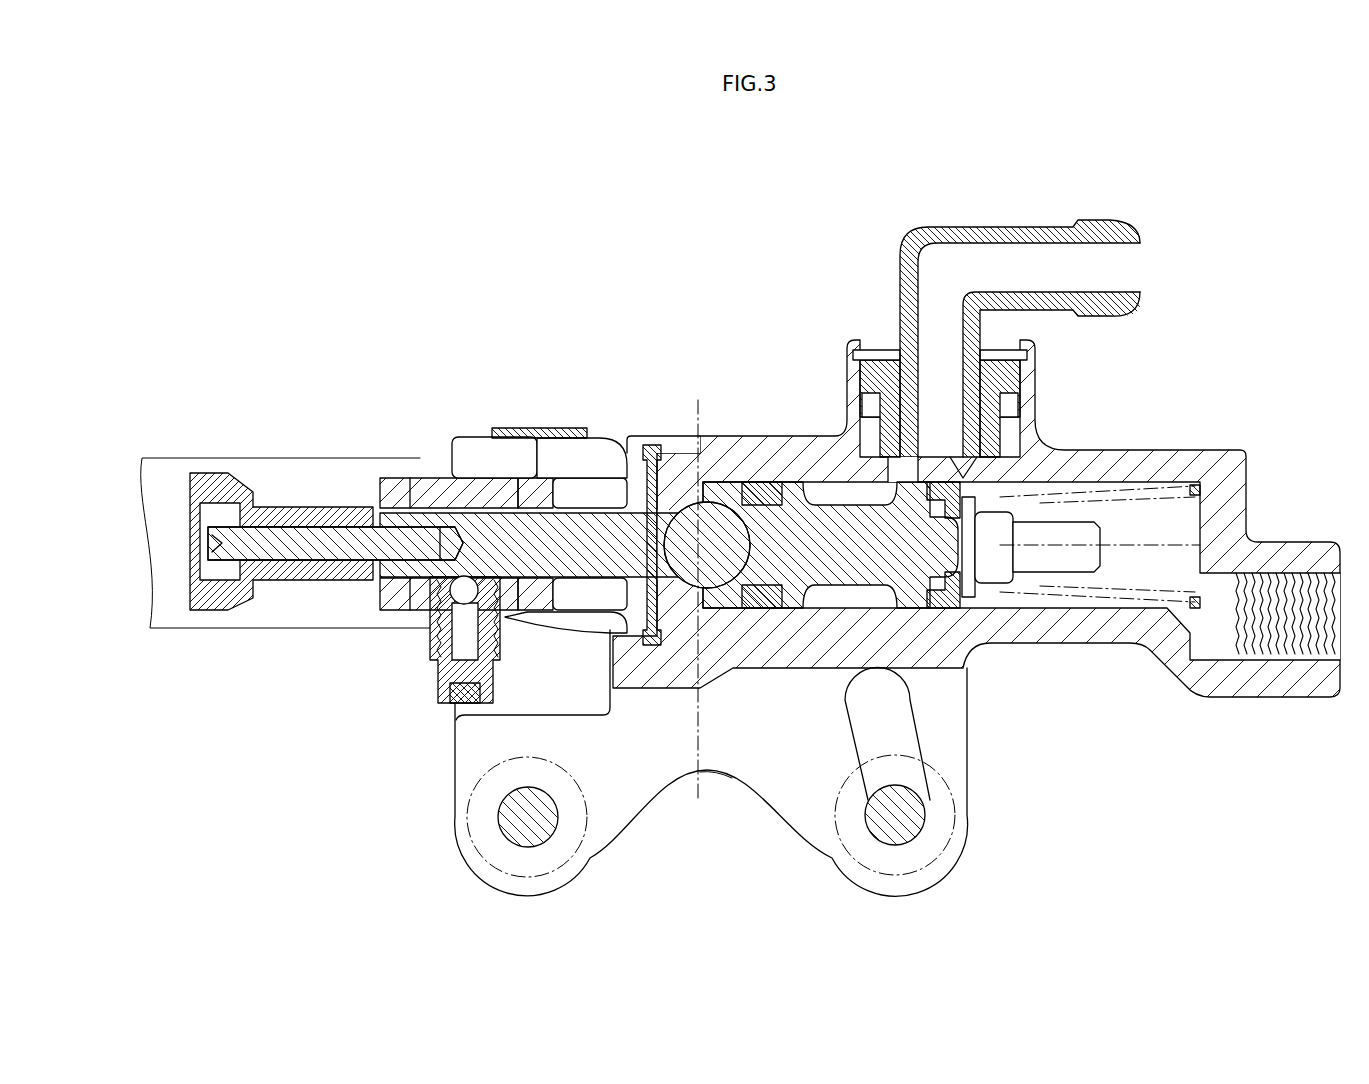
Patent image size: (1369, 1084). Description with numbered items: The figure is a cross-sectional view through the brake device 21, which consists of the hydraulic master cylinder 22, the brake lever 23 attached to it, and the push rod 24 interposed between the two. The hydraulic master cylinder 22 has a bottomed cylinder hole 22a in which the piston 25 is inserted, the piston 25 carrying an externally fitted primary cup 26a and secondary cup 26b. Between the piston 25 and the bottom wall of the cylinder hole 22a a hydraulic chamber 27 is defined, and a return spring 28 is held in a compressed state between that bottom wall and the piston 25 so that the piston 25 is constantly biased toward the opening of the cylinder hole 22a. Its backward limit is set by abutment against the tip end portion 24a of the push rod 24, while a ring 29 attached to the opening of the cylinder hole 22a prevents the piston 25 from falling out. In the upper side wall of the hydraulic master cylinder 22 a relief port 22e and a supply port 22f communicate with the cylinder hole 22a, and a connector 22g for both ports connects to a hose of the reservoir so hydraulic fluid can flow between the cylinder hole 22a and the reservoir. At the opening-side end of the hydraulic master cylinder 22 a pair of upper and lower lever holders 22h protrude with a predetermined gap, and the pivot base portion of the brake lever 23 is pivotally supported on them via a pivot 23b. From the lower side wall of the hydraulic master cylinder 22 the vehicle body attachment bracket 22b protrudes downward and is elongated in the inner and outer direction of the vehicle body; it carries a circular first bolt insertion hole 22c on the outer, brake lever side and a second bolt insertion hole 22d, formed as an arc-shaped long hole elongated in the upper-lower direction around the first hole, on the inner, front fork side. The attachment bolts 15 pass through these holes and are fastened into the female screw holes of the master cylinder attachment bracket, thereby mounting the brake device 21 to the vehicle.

The attachment bolt 15 is at (527, 825).
The brake device 21 is at (1202, 436).
The hydraulic master cylinder 22 is at (976, 524).
The cylinder hole 22a is at (1003, 597).
The vehicle body attachment bracket 22b is at (725, 770).
The first bolt insertion hole 22c is at (545, 790).
The second bolt insertion hole 22d is at (905, 748).
The relief port 22e is at (965, 457).
The supply port 22f is at (907, 466).
The connector 22g is at (1025, 227).
The lever holder 22h is at (487, 440).
The brake lever 23 is at (415, 458).
The pivot 23b is at (548, 428).
The push rod 24 is at (588, 532).
The tip end portion 24a is at (713, 520).
The piston 25 is at (835, 512).
The primary cup 26a is at (945, 610).
The secondary cup 26b is at (760, 608).
The hydraulic chamber 27 is at (1147, 513).
The return spring 28 is at (1128, 645).
The ring 29 is at (652, 458).